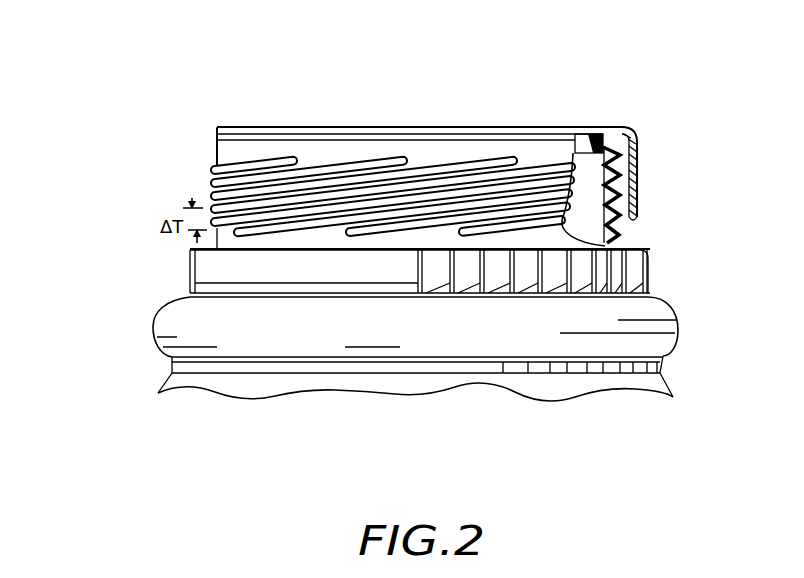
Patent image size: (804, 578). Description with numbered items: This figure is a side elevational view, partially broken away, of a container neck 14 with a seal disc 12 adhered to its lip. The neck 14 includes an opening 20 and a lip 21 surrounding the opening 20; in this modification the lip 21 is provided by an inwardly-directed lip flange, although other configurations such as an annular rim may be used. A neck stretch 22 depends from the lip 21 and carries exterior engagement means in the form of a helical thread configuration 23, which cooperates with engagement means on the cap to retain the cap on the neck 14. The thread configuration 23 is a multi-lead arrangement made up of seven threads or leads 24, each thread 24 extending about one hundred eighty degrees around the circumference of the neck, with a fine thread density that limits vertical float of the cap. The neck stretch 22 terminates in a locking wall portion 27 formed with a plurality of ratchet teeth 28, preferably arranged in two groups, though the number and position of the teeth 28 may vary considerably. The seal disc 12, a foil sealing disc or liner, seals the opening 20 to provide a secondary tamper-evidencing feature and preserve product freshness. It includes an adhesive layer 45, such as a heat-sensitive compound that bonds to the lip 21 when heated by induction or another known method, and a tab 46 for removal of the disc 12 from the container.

The seal disc 12 is at (402, 127).
The container neck 14 is at (472, 96).
The opening 20 is at (579, 140).
The lip 21 is at (598, 143).
The neck stretch 22 is at (226, 152).
The helical thread configuration 23 is at (204, 184).
The thread 24 is at (283, 159).
The locking wall portion 27 is at (213, 262).
The ratchet teeth 28 is at (188, 285).
The adhesive layer 45 is at (232, 141).
The tab 46 is at (634, 177).